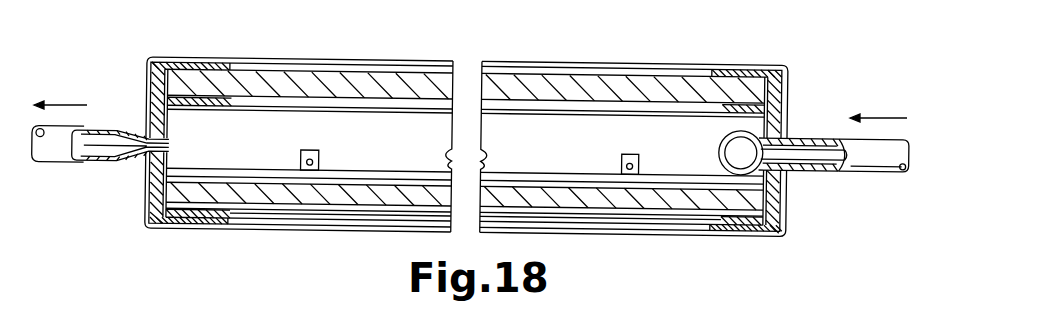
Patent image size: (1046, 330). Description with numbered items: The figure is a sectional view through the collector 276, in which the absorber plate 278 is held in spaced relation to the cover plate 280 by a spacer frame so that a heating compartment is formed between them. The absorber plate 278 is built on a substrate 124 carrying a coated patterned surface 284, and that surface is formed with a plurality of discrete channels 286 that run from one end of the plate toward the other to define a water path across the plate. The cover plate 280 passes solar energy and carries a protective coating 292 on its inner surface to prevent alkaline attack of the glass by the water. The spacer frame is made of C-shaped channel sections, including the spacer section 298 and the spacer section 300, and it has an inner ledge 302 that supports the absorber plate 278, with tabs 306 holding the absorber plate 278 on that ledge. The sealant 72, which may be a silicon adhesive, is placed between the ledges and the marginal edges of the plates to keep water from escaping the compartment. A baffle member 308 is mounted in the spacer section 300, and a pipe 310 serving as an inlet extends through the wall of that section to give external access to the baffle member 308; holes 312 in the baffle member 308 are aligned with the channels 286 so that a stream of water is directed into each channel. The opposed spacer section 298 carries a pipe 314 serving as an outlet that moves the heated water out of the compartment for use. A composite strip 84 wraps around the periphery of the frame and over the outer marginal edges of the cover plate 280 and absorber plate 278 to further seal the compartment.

The composite strip 84 is at (433, 55).
The sealant 72 is at (742, 100).
The collector 276 is at (812, 54).
The cover plate 280 is at (567, 69).
The protective coating 292 is at (564, 104).
The substrate 124 is at (314, 198).
The absorber plate 278 is at (334, 206).
The coated patterned surface 284 is at (442, 182).
The channels 286 is at (492, 182).
The tabs 306 is at (311, 149).
The baffle member 308 is at (722, 149).
The holes 312 is at (721, 173).
The pipe 310 is at (882, 162).
The spacer section 300 is at (782, 198).
The inner ledge 302 is at (206, 196).
The spacer section 298 is at (150, 176).
The pipe 314 is at (62, 151).